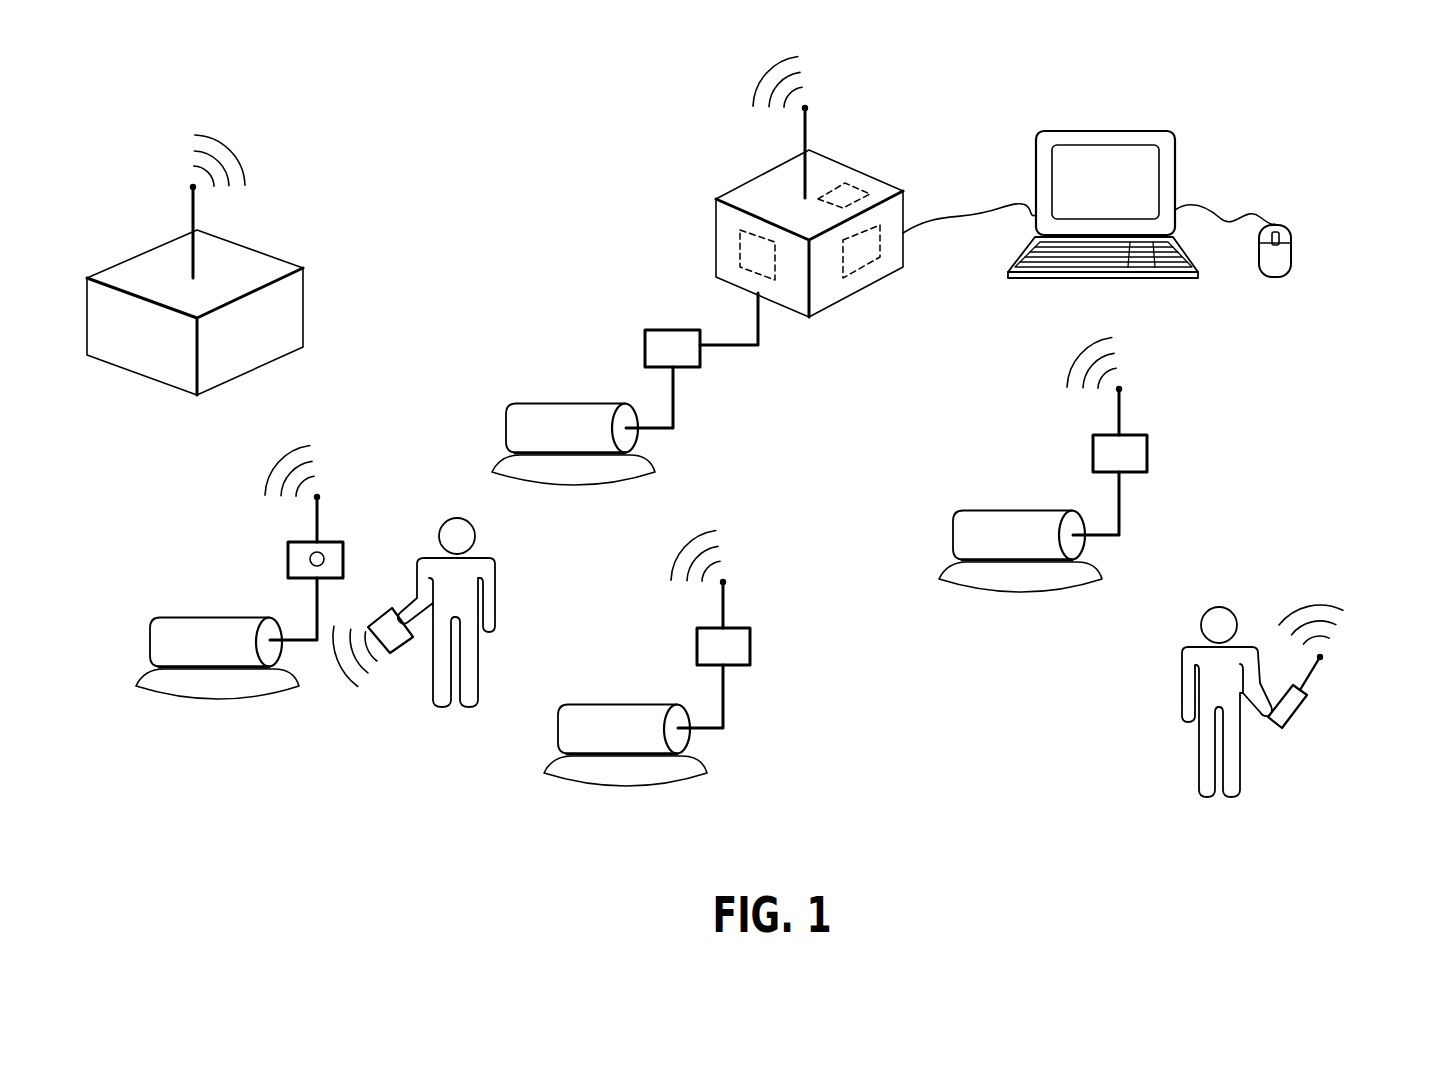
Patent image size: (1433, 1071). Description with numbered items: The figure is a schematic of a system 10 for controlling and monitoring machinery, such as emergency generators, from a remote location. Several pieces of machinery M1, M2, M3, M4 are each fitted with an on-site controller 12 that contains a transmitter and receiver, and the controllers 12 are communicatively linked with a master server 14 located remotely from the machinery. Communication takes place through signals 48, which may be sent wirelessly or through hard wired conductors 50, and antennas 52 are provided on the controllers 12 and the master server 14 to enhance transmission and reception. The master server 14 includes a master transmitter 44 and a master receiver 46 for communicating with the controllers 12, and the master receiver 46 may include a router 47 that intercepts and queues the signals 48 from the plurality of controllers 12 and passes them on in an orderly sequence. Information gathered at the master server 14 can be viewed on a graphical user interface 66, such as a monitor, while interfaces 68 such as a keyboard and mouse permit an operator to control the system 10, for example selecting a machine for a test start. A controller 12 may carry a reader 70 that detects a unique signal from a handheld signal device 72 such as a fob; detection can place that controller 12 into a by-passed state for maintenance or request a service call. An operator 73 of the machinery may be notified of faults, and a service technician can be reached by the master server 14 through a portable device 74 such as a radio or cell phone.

The system 10 is at (1340, 75).
The controller 12 is at (1093, 452).
The master server 14 is at (850, 298).
The master transmitter 44 is at (745, 252).
The master receiver 46 is at (862, 255).
The router 47 is at (847, 197).
The signals 48 is at (1303, 610).
The hard wired conductors 50 is at (735, 347).
The antenna 52 is at (1119, 417).
The graphical user interface 66 is at (1177, 155).
The interface 68 is at (1177, 280).
The reader 70 is at (328, 558).
The signal device 72 is at (398, 653).
The operator 73 is at (112, 357).
The portable device 74 is at (1293, 710).
The machinery M1 is at (148, 643).
The machinery M2 is at (637, 783).
The machinery M3 is at (505, 432).
The machinery M4 is at (952, 535).